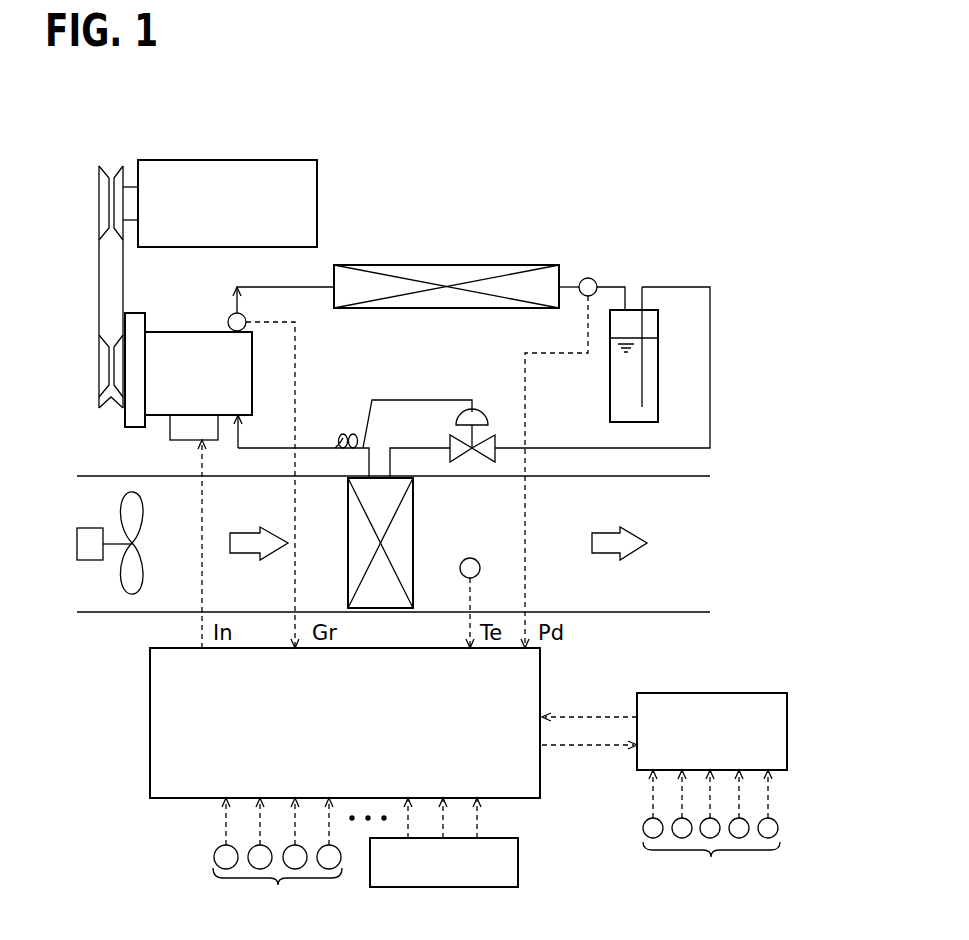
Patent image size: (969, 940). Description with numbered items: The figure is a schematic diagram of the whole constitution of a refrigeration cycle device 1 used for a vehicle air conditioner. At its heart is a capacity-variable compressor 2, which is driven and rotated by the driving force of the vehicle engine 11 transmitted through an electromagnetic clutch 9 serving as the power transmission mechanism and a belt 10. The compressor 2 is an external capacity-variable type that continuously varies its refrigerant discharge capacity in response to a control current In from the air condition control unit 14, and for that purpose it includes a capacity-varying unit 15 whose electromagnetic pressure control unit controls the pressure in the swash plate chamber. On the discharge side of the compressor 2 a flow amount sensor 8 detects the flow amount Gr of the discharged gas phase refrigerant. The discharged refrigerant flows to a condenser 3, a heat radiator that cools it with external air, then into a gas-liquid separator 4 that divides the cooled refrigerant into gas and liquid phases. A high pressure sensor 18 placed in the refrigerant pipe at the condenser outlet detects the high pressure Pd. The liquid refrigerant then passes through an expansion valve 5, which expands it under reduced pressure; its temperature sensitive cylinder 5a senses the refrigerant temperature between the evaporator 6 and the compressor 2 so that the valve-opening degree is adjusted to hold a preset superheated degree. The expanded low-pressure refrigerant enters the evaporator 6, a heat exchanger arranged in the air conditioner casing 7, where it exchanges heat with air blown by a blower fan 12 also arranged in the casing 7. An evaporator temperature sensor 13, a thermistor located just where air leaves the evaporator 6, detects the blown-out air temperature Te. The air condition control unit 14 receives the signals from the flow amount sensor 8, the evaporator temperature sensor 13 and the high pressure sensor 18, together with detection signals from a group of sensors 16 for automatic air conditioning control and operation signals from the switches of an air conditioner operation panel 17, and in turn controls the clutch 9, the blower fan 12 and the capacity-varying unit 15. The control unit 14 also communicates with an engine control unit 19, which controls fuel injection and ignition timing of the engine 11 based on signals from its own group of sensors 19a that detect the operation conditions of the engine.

The refrigeration cycle device 1 is at (658, 275).
The capacity-variable compressor 2 is at (185, 330).
The condenser 3 is at (450, 272).
The gas-liquid separator 4 is at (612, 378).
The expansion valve 5 is at (495, 435).
The temperature sensitive cylinder 5a is at (343, 432).
The evaporator 6 is at (353, 525).
The air conditioner casing 7 is at (88, 615).
The flow amount sensor 8 is at (232, 315).
The electromagnetic clutch 9 is at (130, 418).
The belt 10 is at (105, 283).
The engine 11 is at (317, 166).
The blower fan 12 is at (128, 500).
The evaporator temperature sensor 13 is at (472, 558).
The air condition control unit 14 is at (150, 768).
The capacity-varying unit 15 is at (175, 430).
The group of sensors 16 is at (277, 879).
The air conditioner operation panel 17 is at (520, 862).
The high pressure sensor 18 is at (588, 275).
The engine control unit 19 is at (790, 728).
The group of sensors 19a is at (711, 851).